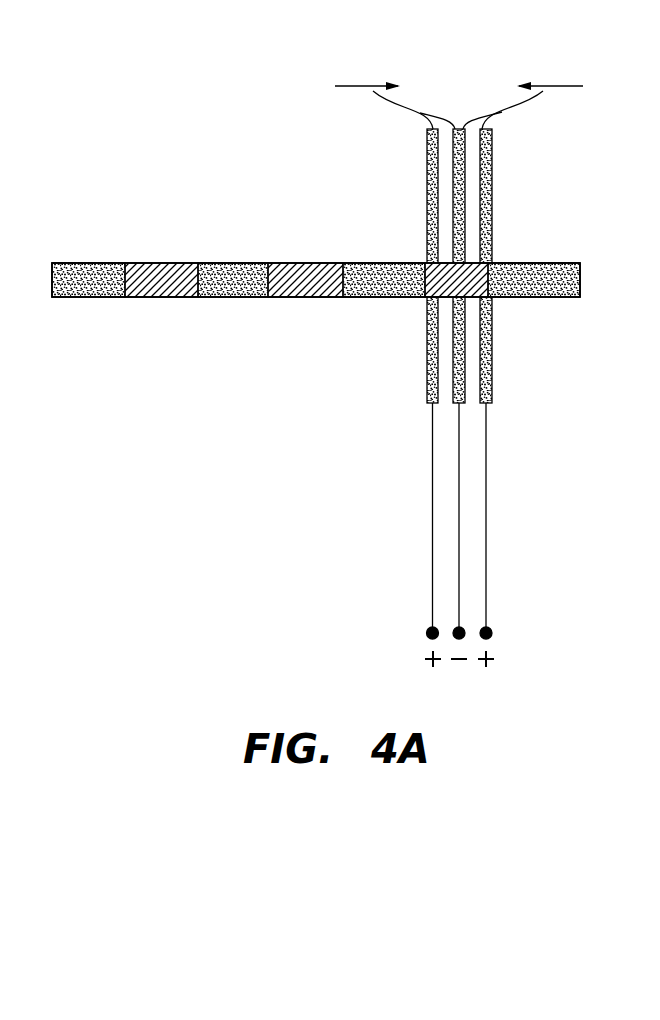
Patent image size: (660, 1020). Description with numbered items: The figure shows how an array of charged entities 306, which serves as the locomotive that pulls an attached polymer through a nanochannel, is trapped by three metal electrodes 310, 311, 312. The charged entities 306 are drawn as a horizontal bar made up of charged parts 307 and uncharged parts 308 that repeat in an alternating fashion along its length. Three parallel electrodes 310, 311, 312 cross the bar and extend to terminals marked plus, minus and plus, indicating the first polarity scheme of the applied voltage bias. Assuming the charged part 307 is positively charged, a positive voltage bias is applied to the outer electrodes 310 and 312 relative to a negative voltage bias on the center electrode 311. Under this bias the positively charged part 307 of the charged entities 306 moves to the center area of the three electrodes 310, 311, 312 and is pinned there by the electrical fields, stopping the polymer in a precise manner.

The charged entities 306 is at (316, 269).
The charged part 307 is at (307, 288).
The uncharged part 308 is at (388, 288).
The electrode 310 is at (433, 208).
The electrode 311 is at (458, 180).
The electrode 312 is at (486, 148).